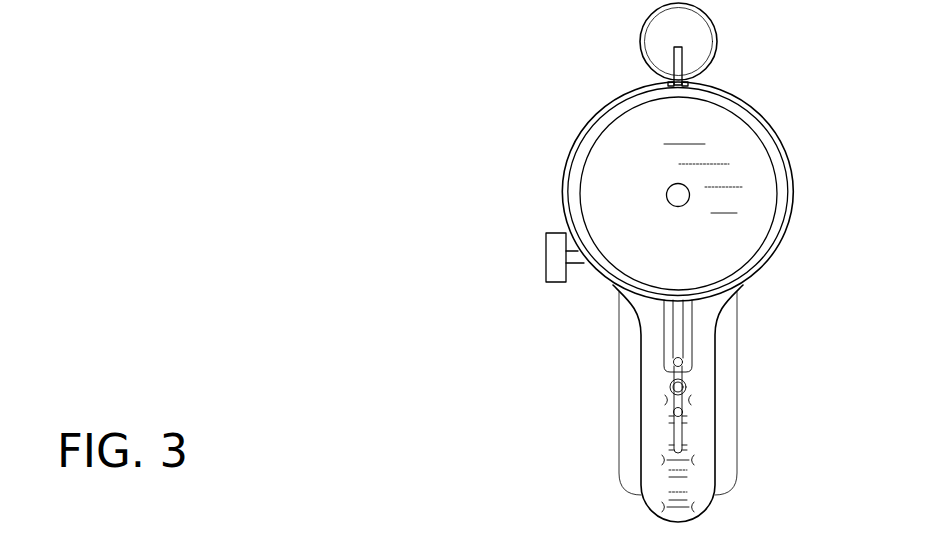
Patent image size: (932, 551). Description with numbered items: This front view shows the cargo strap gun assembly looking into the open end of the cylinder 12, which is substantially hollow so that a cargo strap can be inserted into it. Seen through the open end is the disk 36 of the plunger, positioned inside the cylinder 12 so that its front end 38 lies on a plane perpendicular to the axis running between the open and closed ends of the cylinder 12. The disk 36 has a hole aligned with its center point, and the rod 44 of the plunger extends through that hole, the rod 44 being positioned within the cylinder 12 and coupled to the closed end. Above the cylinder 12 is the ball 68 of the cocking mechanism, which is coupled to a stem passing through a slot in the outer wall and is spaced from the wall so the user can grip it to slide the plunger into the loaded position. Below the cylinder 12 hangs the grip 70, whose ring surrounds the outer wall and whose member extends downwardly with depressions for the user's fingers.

The cylinder 12 is at (773, 148).
The disk 36 is at (773, 208).
The front end 38 is at (727, 245).
The rod 44 is at (673, 194).
The ball 68 is at (717, 40).
The grip 70 is at (626, 416).